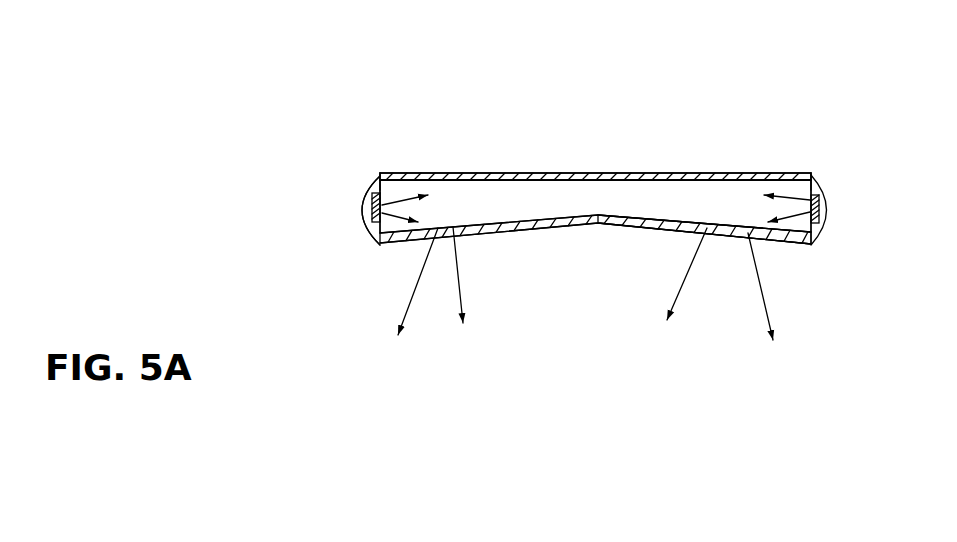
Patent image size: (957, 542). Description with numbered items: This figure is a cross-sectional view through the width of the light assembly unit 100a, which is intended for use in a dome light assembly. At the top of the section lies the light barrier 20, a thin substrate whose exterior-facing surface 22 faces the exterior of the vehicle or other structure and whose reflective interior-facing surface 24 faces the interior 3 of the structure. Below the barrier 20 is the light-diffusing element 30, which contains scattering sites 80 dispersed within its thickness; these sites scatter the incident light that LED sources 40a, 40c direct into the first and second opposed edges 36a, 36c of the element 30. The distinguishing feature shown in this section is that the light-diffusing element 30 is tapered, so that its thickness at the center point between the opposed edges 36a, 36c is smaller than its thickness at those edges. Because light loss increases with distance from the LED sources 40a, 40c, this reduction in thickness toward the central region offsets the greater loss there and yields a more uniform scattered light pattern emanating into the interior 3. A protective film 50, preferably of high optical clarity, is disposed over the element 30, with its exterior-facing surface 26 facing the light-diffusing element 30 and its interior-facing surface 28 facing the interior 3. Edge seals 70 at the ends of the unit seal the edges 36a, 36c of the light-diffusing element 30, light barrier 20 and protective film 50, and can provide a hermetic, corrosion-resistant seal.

The light assembly unit 100a is at (716, 90).
The light barrier 20 is at (797, 175).
The exterior-facing surface 22 is at (636, 171).
The interior-facing surface 24 is at (534, 187).
The exterior-facing surface 26 is at (652, 214).
The interior-facing surface 28 is at (624, 228).
The light-diffusing element 30 is at (773, 183).
The first edge 36a is at (818, 179).
The second edge 36c is at (374, 176).
The LED source 40a is at (820, 216).
The LED source 40c is at (371, 215).
The protective film 50 is at (804, 246).
The edge seal 70 is at (365, 188).
The scattering sites 80 is at (477, 205).
The interior 3 is at (712, 327).